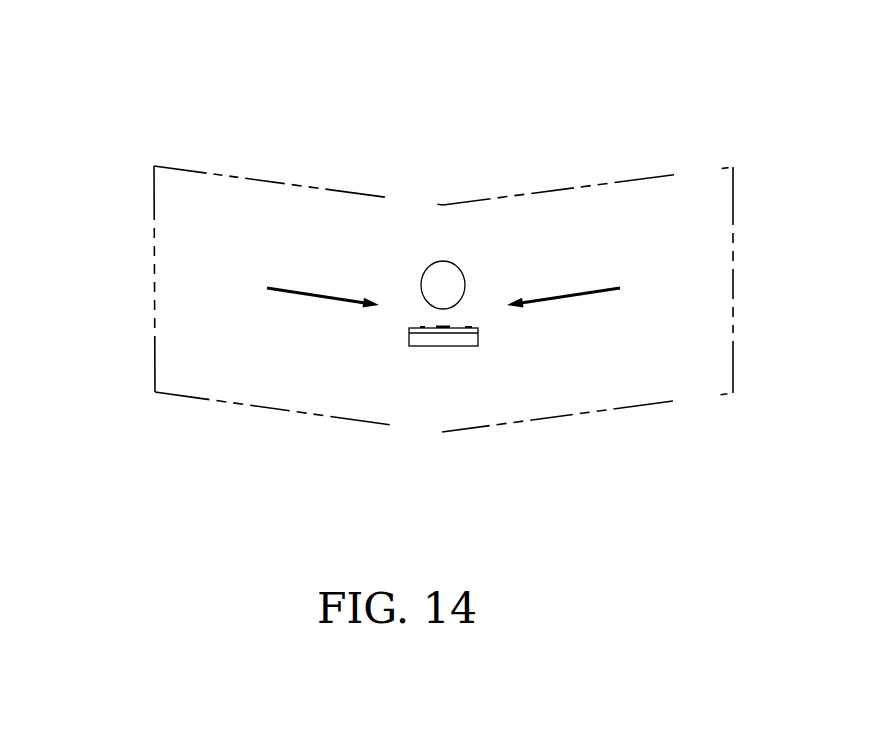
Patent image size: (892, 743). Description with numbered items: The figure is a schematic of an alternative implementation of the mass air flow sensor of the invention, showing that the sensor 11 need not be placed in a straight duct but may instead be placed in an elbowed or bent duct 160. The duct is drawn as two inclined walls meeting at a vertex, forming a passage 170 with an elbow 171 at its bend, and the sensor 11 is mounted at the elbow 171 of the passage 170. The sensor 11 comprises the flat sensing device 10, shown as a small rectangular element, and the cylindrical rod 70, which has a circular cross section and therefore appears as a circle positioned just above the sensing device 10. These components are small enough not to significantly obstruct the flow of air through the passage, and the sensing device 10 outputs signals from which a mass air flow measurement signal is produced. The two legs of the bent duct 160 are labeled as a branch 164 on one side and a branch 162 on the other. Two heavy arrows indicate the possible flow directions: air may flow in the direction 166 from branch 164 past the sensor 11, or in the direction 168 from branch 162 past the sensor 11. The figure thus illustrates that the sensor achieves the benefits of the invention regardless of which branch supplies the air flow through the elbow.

The flat sensing device 10 is at (431, 352).
The sensor 11 is at (395, 320).
The cylindrical rod 70 is at (452, 272).
The bent duct 160 is at (597, 178).
The branch 162 is at (695, 167).
The branch 164 is at (265, 181).
The flow direction 166 is at (321, 292).
The flow direction 168 is at (570, 292).
The passage 170 is at (193, 287).
The elbow 171 is at (442, 432).